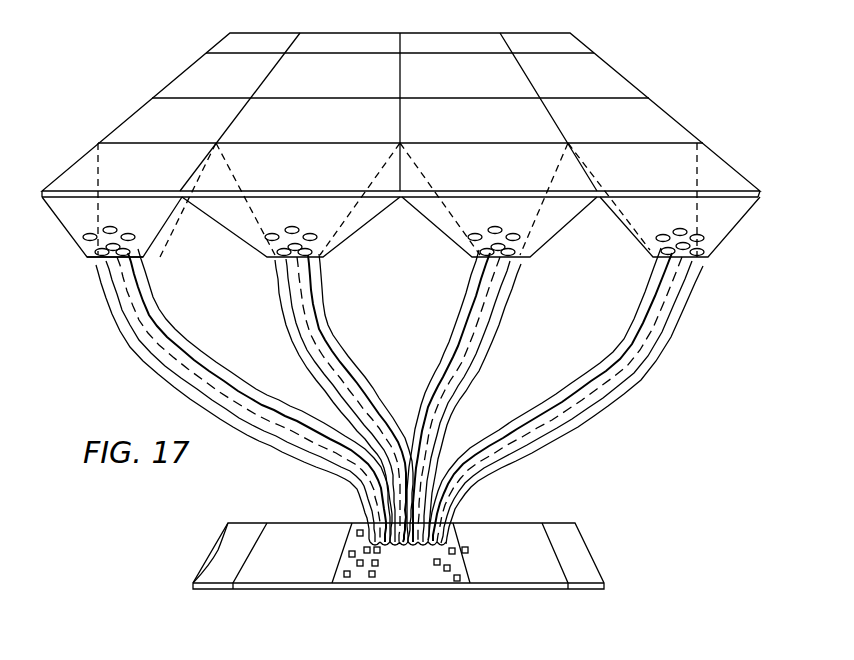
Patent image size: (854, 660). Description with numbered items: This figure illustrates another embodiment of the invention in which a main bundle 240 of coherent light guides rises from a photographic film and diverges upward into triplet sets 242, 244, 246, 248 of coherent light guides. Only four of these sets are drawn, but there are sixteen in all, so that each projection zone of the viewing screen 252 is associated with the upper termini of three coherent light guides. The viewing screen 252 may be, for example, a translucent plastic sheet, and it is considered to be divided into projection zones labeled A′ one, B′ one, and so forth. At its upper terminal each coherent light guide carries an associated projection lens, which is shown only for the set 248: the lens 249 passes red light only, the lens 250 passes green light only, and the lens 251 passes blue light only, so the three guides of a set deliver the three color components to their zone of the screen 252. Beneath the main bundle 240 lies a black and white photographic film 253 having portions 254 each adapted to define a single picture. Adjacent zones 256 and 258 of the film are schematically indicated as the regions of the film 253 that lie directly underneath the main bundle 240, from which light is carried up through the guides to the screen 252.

The main bundle 240 is at (457, 492).
The triplet set of coherent light guides 242 is at (647, 373).
The triplet set of coherent light guides 244 is at (508, 312).
The triplet set of coherent light guides 246 is at (323, 320).
The triplet set of coherent light guides 248 is at (158, 328).
The lens 249 is at (87, 260).
The lens 250 is at (117, 231).
The lens 251 is at (148, 262).
The viewing screen 252 is at (663, 128).
The photographic film 253 is at (523, 589).
The portions of the film 254 is at (435, 572).
The zone of the film 256 is at (377, 566).
The zone of the film 258 is at (362, 567).